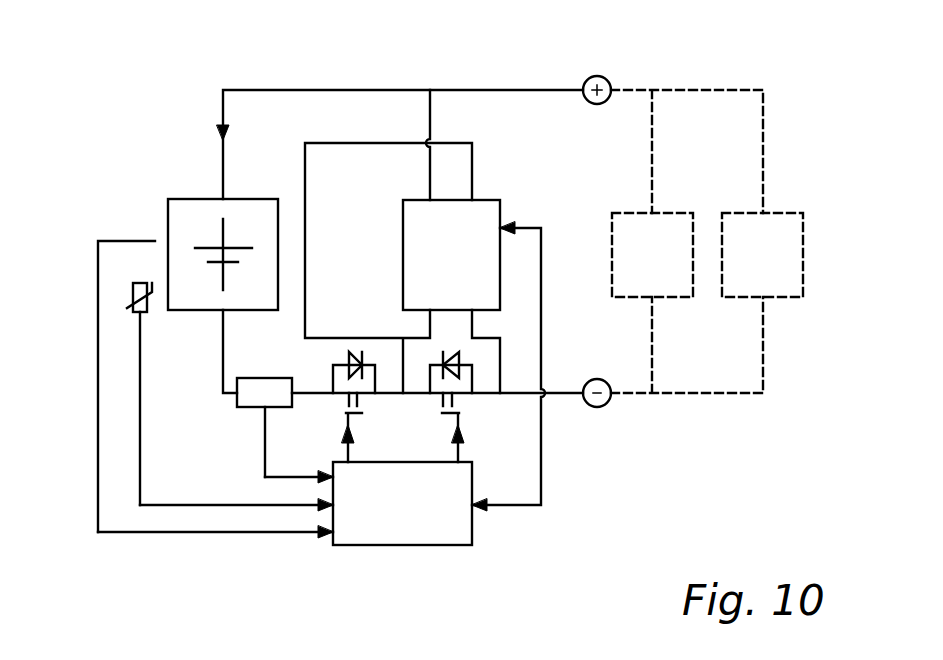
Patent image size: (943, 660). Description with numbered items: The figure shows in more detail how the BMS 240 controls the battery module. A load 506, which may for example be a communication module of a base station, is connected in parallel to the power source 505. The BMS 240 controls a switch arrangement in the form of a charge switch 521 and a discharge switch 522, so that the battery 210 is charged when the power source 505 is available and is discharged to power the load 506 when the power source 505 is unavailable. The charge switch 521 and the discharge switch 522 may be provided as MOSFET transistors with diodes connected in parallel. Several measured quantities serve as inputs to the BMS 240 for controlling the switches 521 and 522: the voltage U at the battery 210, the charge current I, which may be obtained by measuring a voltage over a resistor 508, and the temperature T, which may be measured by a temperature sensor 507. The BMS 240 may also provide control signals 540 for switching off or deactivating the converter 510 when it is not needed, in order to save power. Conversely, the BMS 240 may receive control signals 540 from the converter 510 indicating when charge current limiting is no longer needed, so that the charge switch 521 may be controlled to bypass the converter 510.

The battery 210 is at (197, 199).
The converter 510 is at (418, 198).
The temperature sensor 507 is at (127, 306).
The resistor 508 is at (248, 408).
The charge switch 521 is at (473, 406).
The discharge switch 522 is at (376, 408).
The control signals 540 is at (530, 507).
The BMS 240 is at (362, 547).
The power source 505 is at (663, 298).
The load 506 is at (777, 298).